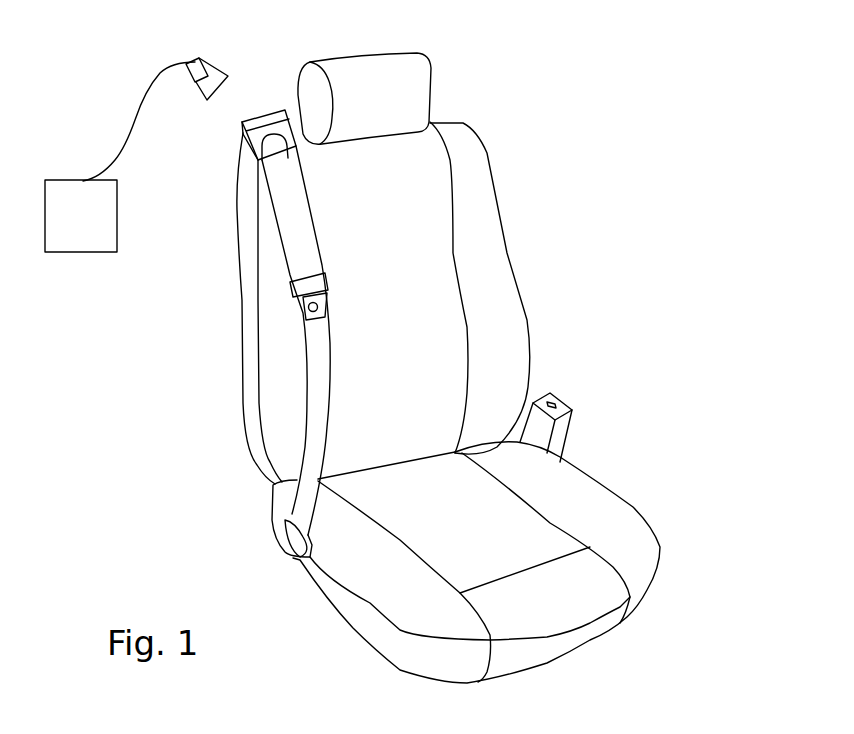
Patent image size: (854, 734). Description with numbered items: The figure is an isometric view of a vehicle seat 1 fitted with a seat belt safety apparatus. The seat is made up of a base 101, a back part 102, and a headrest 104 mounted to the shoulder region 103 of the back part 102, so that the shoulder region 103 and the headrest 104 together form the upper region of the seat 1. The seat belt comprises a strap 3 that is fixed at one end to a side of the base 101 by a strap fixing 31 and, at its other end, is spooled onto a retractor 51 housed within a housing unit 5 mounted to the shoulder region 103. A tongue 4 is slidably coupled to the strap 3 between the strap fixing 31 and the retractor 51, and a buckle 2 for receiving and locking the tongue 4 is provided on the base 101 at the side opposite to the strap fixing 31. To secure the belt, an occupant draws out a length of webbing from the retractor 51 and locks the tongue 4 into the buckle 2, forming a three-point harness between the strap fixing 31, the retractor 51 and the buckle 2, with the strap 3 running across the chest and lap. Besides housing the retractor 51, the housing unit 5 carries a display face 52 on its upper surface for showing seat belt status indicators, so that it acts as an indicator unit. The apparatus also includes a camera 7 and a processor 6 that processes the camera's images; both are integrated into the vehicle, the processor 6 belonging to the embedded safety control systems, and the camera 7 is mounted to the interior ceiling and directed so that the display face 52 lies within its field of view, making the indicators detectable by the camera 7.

The vehicle seat 1 is at (488, 160).
The base 101 is at (622, 521).
The back part 102 is at (480, 257).
The shoulder region 103 is at (443, 128).
The headrest 104 is at (413, 67).
The buckle 2 is at (570, 404).
The strap 3 is at (259, 356).
The strap fixing 31 is at (283, 540).
The tongue 4 is at (300, 297).
The housing unit 5 is at (234, 248).
The retractor 51 is at (243, 228).
The display face 52 is at (268, 108).
The processor 6 is at (90, 231).
The camera 7 is at (197, 60).